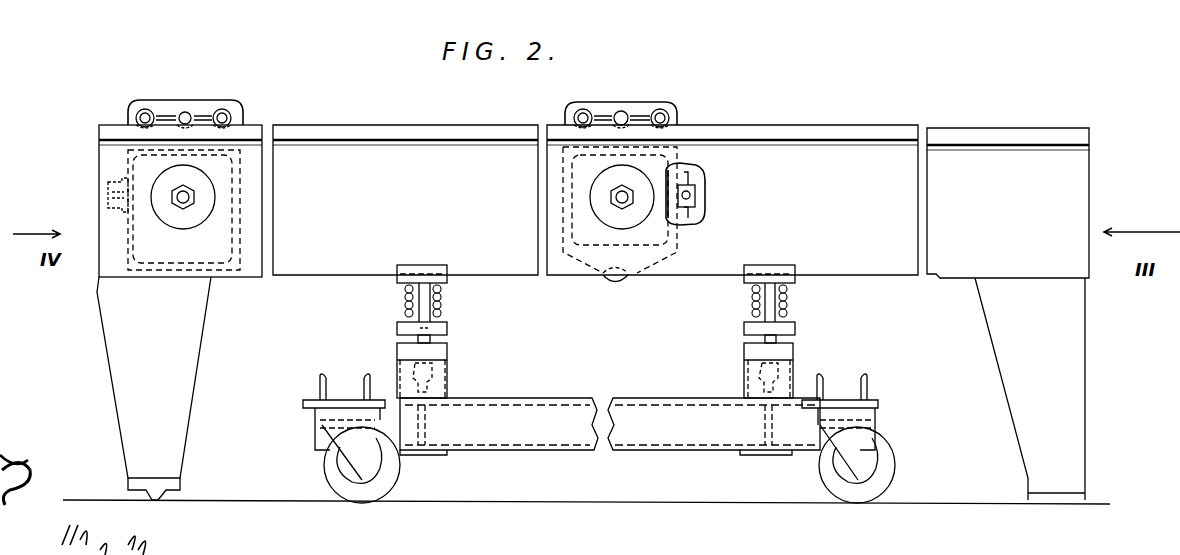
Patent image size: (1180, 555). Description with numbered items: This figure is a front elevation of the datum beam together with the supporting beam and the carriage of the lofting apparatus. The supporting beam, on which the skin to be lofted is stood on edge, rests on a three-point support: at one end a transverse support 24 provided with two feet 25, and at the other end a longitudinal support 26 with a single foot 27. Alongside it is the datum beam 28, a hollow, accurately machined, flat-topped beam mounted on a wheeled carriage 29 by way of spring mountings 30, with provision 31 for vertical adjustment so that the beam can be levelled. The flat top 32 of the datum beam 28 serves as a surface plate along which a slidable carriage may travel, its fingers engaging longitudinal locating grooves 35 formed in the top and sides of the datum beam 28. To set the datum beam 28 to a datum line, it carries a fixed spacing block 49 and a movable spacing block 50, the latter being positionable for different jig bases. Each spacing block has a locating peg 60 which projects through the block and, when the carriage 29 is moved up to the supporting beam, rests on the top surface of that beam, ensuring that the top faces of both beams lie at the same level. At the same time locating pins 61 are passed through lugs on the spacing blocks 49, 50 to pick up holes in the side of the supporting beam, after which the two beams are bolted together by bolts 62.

The transverse support 24 is at (125, 344).
The feet 25 is at (150, 488).
The longitudinal support 26 is at (1065, 368).
The foot 27 is at (1063, 498).
The datum beam 28 is at (322, 257).
The wheeled carriage 29 is at (553, 398).
The spring mountings 30 is at (440, 305).
The provision for vertical adjustment 31 is at (428, 365).
The flat top 32 is at (757, 125).
The longitudinal locating grooves 35 is at (972, 145).
The fixed spacing block 49 is at (212, 103).
The movable spacing block 50 is at (616, 103).
The locating peg 60 is at (186, 112).
The locating pins 61 is at (106, 192).
The bolts 62 is at (189, 193).